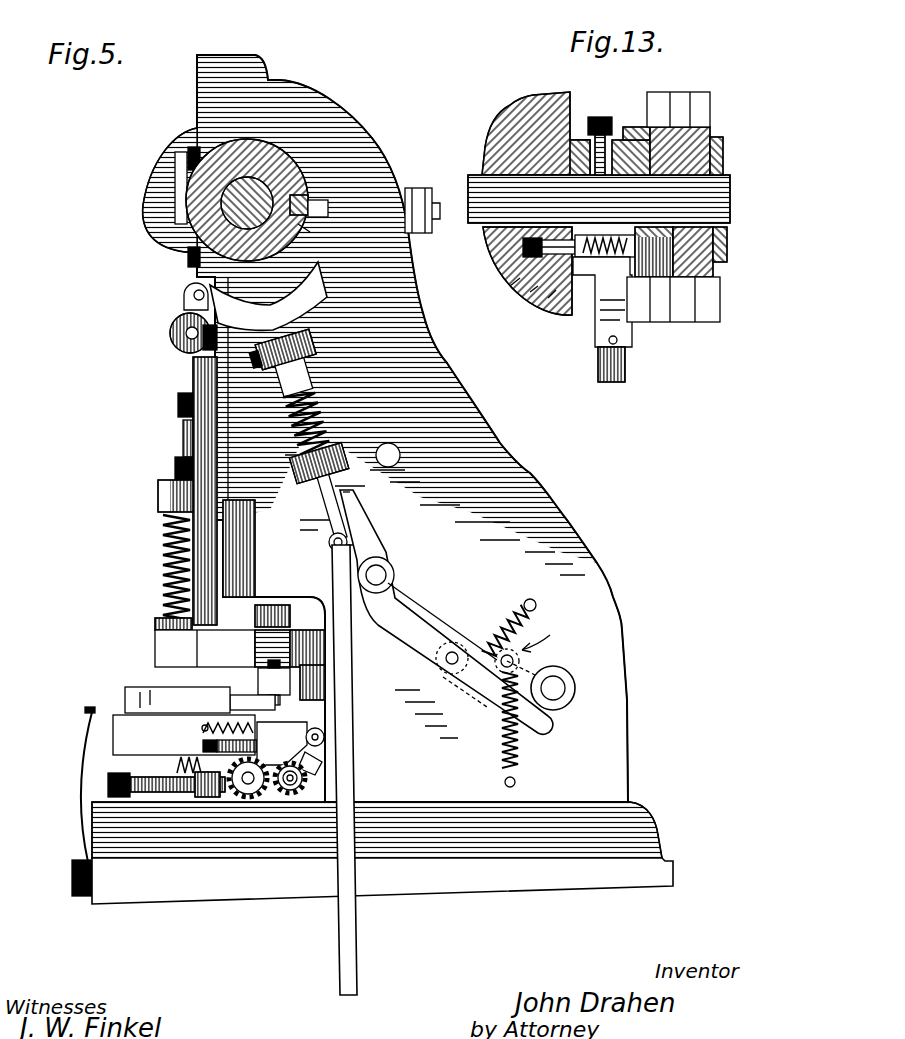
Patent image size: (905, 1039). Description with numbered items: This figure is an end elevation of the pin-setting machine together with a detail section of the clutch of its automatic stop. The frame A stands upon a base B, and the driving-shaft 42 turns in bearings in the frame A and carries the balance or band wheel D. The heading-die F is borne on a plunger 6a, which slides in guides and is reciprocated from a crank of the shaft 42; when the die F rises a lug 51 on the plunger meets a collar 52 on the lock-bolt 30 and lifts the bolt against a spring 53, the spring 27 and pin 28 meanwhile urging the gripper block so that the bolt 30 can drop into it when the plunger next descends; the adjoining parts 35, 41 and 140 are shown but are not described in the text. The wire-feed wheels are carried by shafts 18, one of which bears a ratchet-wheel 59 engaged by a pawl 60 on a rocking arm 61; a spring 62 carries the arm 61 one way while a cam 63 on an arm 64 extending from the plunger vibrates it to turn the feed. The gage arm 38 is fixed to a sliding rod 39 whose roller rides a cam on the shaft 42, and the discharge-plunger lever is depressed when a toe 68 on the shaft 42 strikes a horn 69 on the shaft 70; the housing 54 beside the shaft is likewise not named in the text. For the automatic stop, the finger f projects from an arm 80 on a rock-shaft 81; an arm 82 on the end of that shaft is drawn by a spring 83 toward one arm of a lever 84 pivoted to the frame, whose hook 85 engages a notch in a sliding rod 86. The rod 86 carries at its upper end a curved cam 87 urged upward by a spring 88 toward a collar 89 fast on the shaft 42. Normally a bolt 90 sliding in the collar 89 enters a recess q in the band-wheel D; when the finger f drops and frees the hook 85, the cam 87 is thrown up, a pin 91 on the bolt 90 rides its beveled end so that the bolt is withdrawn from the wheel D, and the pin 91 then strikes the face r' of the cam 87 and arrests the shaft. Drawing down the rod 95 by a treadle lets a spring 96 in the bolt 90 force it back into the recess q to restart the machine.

In FIG. 5, the frame A is at (412, 428).
In FIG. 13, the frame A is at (522, 107).
In FIG. 5, the base B is at (668, 858).
In FIG. 13, the balance-wheel D is at (712, 118).
In FIG. 5, the heading-die F is at (255, 668).
In FIG. 5, the stop-finger f is at (440, 663).
In FIG. 13, the recess q is at (727, 243).
In FIG. 13, the shoulder r is at (503, 294).
In FIG. 13, the face of the cam r' is at (602, 302).
In FIG. 5, the plunger 6a is at (263, 615).
In FIG. 5, the shafts 18 is at (250, 790).
In FIG. 5, the spring 27 is at (84, 796).
In FIG. 5, the pin 28 is at (125, 701).
In FIG. 5, the lock-bolt 30 is at (163, 573).
In FIG. 5, the block 35 is at (312, 682).
In FIG. 5, the arm 38 is at (190, 794).
In FIG. 5, the sliding rod 39 is at (184, 302).
In FIG. 5, the plate 41 is at (230, 700).
In FIG. 5, the driving-shaft 42 is at (247, 200).
In FIG. 13, the driving-shaft 42 is at (471, 180).
In FIG. 5, the lug 51 is at (155, 652).
In FIG. 5, the collar 52 is at (155, 624).
In FIG. 5, the spring 53 is at (163, 531).
In FIG. 5, the cover 54 is at (150, 188).
In FIG. 5, the ratchet-wheel 59 is at (296, 792).
In FIG. 5, the pawl 60 is at (318, 765).
In FIG. 5, the rocking arm 61 is at (325, 740).
In FIG. 5, the spring 62 is at (203, 729).
In FIG. 5, the cam 63 is at (282, 743).
In FIG. 5, the arm 64 is at (274, 682).
In FIG. 5, the toe 68 is at (177, 222).
In FIG. 5, the horn 69 is at (172, 327).
In FIG. 5, the shaft 70 is at (190, 338).
In FIG. 5, the arm 80 is at (469, 690).
In FIG. 5, the rock-shaft 81 is at (566, 682).
In FIG. 5, the arm 82 is at (516, 637).
In FIG. 5, the spring 83 is at (519, 752).
In FIG. 5, the lever 84 is at (412, 646).
In FIG. 5, the hook 85 is at (372, 492).
In FIG. 5, the sliding rod 86 is at (322, 507).
In FIG. 13, the sliding rod 86 is at (626, 370).
In FIG. 5, the curved cam 87 is at (268, 296).
In FIG. 13, the curved cam 87 is at (632, 286).
In FIG. 5, the spring 88 is at (299, 438).
In FIG. 5, the collar 89 is at (310, 232).
In FIG. 13, the collar 89 is at (633, 125).
In FIG. 5, the bolt 90 is at (306, 195).
In FIG. 13, the bolt 90 is at (530, 292).
In FIG. 5, the pin 91 is at (328, 205).
In FIG. 13, the pin 91 is at (548, 298).
In FIG. 5, the rod 95 is at (357, 933).
In FIG. 13, the spring 96 is at (612, 235).
In FIG. 5, the block 140 is at (180, 764).